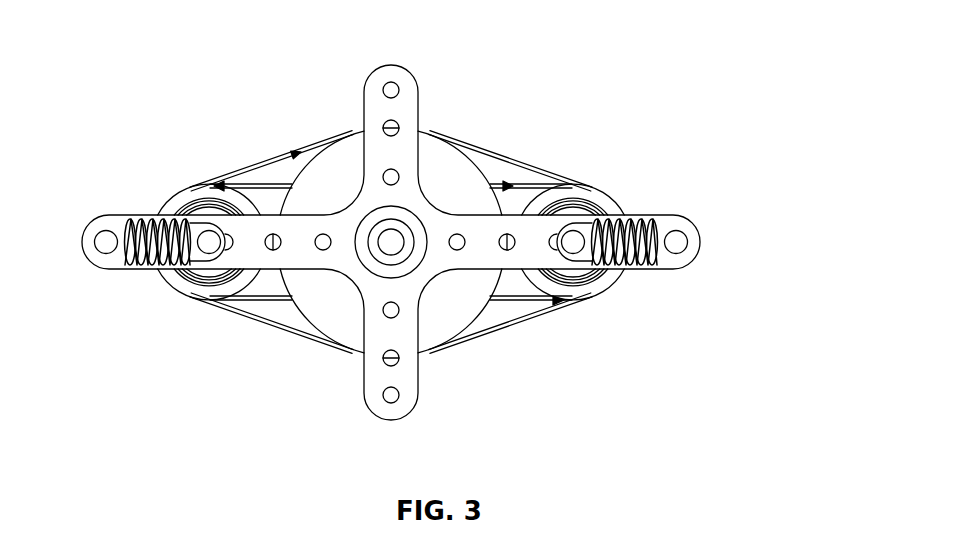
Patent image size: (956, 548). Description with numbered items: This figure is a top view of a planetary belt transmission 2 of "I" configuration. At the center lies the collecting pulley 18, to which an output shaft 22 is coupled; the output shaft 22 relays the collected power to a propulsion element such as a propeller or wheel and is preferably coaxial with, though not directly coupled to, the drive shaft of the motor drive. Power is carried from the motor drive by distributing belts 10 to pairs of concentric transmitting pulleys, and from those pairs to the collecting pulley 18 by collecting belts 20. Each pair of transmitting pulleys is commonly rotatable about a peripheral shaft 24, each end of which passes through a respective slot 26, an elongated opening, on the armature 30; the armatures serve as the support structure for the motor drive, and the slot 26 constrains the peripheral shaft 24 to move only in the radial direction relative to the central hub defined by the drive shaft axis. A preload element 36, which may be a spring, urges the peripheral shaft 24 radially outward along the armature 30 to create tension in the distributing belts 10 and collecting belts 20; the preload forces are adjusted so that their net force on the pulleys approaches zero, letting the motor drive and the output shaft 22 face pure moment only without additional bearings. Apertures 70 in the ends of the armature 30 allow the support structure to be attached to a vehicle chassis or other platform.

The planetary belt transmission 2 is at (491, 106).
The distributing belts 10 is at (268, 182).
The collecting pulley 18 is at (350, 153).
The collecting belts 20 is at (292, 152).
The output shaft 22 is at (394, 250).
The peripheral shaft 24 is at (208, 245).
The slot 26 is at (573, 228).
The armature 30 is at (703, 240).
The preload element 36 is at (145, 226).
The apertures 70 is at (394, 83).